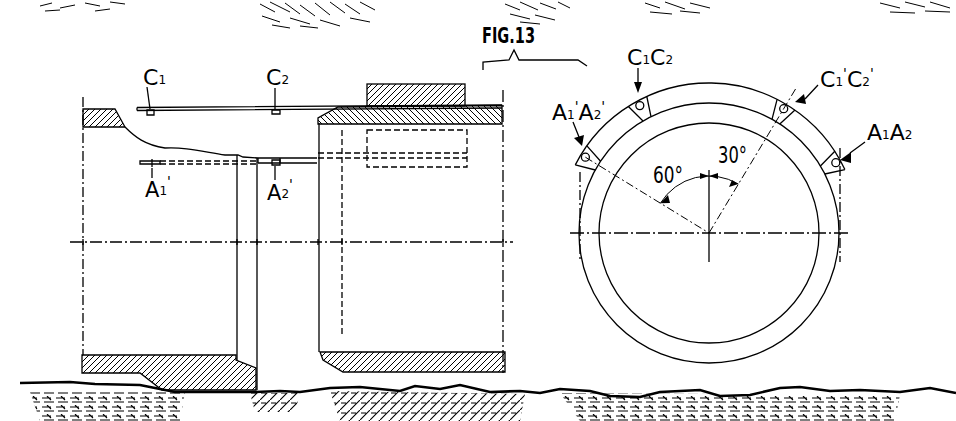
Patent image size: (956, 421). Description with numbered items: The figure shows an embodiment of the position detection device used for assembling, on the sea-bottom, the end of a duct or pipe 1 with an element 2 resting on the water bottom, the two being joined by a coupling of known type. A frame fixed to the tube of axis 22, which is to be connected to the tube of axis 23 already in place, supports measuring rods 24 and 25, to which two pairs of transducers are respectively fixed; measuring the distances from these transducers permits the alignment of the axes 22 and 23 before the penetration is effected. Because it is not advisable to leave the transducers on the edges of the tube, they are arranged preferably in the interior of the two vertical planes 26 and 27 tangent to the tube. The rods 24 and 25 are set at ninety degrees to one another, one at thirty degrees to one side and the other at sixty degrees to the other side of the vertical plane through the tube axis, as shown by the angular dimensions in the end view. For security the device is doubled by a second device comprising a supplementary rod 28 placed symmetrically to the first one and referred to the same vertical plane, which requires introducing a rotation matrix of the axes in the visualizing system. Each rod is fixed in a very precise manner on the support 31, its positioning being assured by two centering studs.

The pipe 1 is at (125, 363).
The element 2 is at (487, 352).
The axis of tube 22 is at (483, 232).
The axis of tube 23 is at (103, 242).
The measuring rod 24 is at (298, 158).
The measuring rod 25 is at (783, 104).
The vertical plane 26 is at (578, 197).
The vertical plane 27 is at (841, 187).
The supplementary rod 28 is at (319, 106).
The support 31 is at (405, 90).